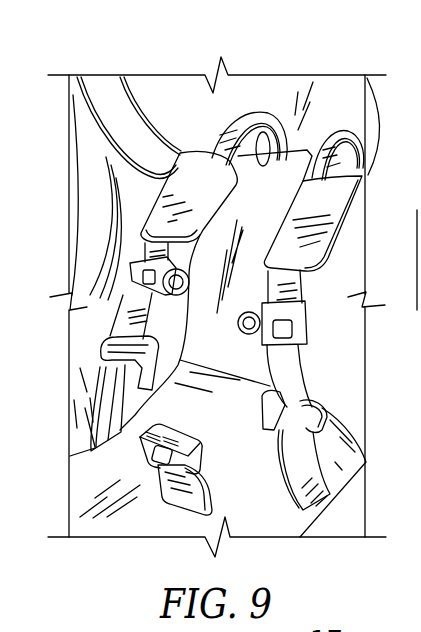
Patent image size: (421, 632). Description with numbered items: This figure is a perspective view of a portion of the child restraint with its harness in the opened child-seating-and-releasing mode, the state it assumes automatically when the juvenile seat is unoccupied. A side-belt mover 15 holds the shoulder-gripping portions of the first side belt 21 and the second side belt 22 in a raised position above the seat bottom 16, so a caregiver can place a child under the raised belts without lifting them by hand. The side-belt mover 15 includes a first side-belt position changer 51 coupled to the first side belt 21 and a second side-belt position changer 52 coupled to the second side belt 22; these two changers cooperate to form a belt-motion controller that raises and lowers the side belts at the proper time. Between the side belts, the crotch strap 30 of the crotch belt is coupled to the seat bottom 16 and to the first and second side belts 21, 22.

The side-belt mover 15 is at (338, 42).
The seat bottom 16 is at (95, 490).
The first side belt 21 is at (318, 385).
The second side belt 22 is at (93, 396).
The crotch strap 30 is at (212, 481).
The first side-belt position changer 51 is at (367, 160).
The second side-belt position changer 52 is at (258, 145).